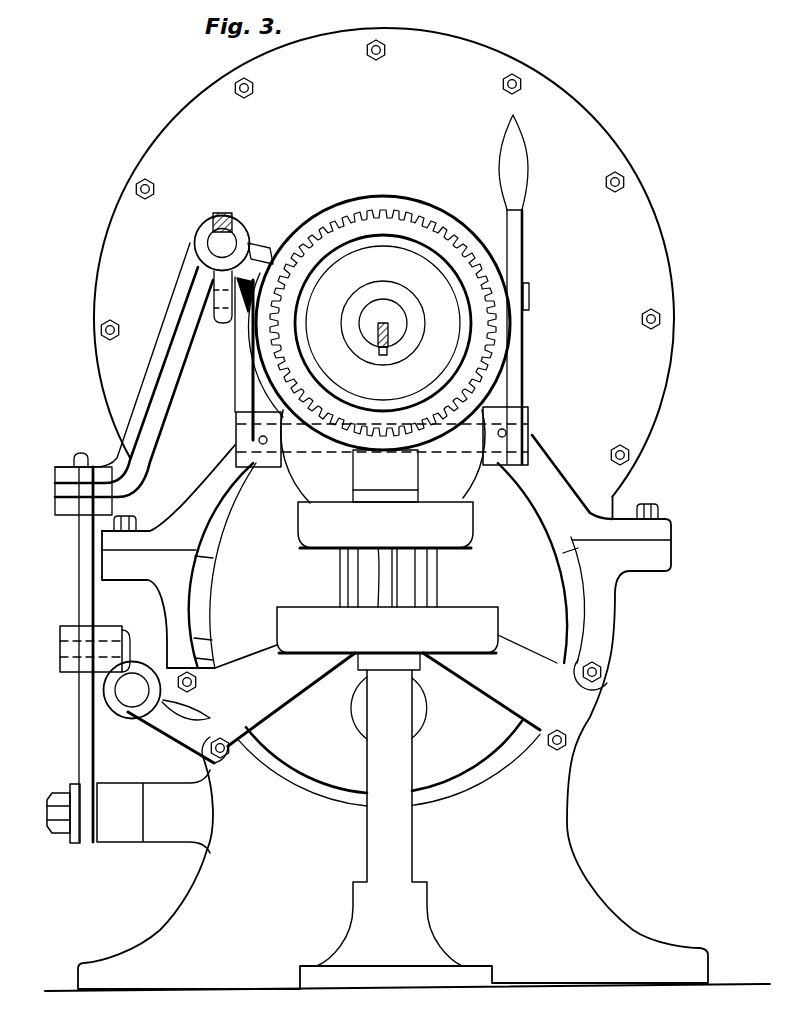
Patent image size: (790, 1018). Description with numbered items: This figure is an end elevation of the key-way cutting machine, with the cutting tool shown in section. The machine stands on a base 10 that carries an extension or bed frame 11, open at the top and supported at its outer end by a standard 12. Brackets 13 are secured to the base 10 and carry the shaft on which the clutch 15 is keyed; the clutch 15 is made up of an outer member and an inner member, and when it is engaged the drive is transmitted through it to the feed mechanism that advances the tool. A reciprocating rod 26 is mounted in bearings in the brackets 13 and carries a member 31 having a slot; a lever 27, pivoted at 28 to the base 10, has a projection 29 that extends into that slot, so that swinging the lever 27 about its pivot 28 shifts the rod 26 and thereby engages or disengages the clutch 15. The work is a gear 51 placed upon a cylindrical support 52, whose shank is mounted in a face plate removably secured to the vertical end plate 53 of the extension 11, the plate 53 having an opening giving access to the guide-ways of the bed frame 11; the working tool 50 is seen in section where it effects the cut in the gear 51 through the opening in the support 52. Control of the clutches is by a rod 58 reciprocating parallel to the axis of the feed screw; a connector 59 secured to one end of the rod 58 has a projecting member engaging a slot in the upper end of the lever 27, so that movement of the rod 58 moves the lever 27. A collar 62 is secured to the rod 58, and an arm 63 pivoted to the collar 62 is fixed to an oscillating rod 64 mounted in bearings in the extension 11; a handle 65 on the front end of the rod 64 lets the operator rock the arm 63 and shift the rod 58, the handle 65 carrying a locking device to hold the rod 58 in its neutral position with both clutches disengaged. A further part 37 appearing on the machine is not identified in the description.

The base 10 is at (203, 895).
The bed frame 11 is at (460, 478).
The standard 12 is at (404, 848).
The bracket 13 is at (127, 714).
The clutch 15 is at (322, 768).
The reciprocating rod 26 is at (128, 692).
The lever 27 is at (82, 573).
The pivot 28 is at (45, 813).
The projection 29 is at (60, 652).
The member 31 is at (114, 653).
The cover plate 37 is at (576, 113).
The working tool 50 is at (386, 356).
The gear 51 is at (388, 222).
The cylindrical support 52 is at (394, 313).
The vertical end plate 53 is at (436, 213).
The rod 58 is at (227, 243).
The connector 59 is at (168, 374).
The collar 62 is at (207, 234).
The arm 63 is at (243, 393).
The oscillating rod 64 is at (533, 435).
The handle 65 is at (518, 236).